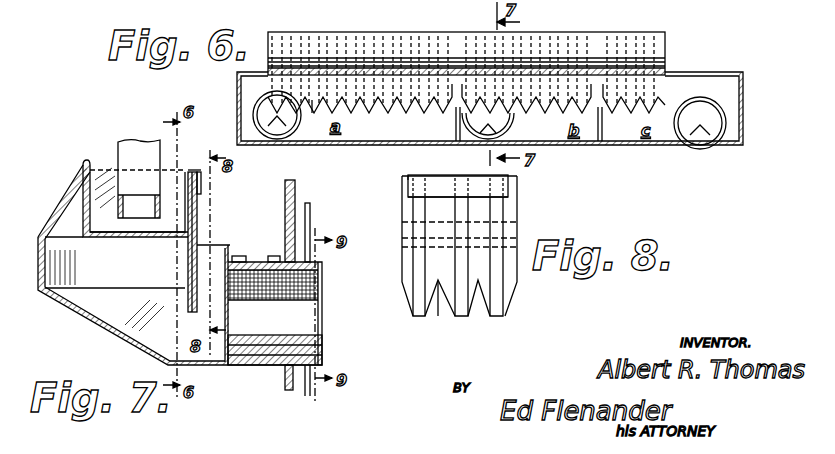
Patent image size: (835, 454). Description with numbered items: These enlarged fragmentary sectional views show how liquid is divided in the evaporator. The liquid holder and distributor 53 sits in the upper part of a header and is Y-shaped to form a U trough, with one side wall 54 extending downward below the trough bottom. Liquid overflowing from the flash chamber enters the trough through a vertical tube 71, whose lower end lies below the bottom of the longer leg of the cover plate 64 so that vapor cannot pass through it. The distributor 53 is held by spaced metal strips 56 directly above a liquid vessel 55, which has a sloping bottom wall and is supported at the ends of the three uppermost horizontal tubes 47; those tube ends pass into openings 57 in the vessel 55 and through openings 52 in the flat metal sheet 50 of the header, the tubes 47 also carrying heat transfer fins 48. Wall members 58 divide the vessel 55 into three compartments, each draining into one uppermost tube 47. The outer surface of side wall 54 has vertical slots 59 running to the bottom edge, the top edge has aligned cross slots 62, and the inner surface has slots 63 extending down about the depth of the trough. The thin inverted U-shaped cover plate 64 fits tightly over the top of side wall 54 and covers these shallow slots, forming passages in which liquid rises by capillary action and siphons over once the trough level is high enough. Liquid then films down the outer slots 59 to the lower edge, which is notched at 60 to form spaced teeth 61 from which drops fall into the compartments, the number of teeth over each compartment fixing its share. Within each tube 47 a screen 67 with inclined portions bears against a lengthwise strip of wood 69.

In FIG. 6, the horizontal tubes 47 is at (258, 95).
In FIG. 7, the horizontal tubes 47 is at (258, 367).
In FIG. 7, the heat transfer fins 48 is at (311, 213).
In FIG. 7, the flat metal sheet 50 is at (296, 200).
In FIG. 7, the openings 52 is at (274, 256).
In FIG. 6, the liquid holder and distributor 53 is at (665, 55).
In FIG. 7, the liquid holder and distributor 53 is at (93, 163).
In FIG. 6, the side wall 54 is at (663, 90).
In FIG. 7, the side wall 54 is at (188, 262).
In FIG. 8, the side wall 54 is at (515, 233).
In FIG. 6, the liquid vessel 55 is at (743, 90).
In FIG. 7, the liquid vessel 55 is at (85, 312).
In FIG. 7, the metal strips 56 is at (66, 197).
In FIG. 7, the openings 57 is at (237, 256).
In FIG. 6, the wall members 58 is at (456, 128).
In FIG. 7, the wall members 58 is at (103, 292).
In FIG. 8, the wall members 58 is at (458, 173).
In FIG. 7, the vertical slots 59 is at (197, 222).
In FIG. 8, the vertical slots 59 is at (418, 265).
In FIG. 6, the notches 60 is at (356, 109).
In FIG. 8, the notches 60 is at (434, 308).
In FIG. 6, the teeth 61 is at (313, 115).
In FIG. 8, the teeth 61 is at (470, 312).
In FIG. 7, the top cross slots 62 is at (192, 170).
In FIG. 8, the top cross slots 62 is at (412, 176).
In FIG. 6, the inner slots 63 is at (337, 66).
In FIG. 7, the inner slots 63 is at (165, 233).
In FIG. 6, the cover plate 64 is at (457, 44).
In FIG. 7, the cover plate 64 is at (201, 188).
In FIG. 8, the cover plate 64 is at (490, 196).
In FIG. 7, the screens 67 is at (306, 280).
In FIG. 7, the strip of wood 69 is at (322, 351).
In FIG. 7, the vertical tube 71 is at (118, 148).